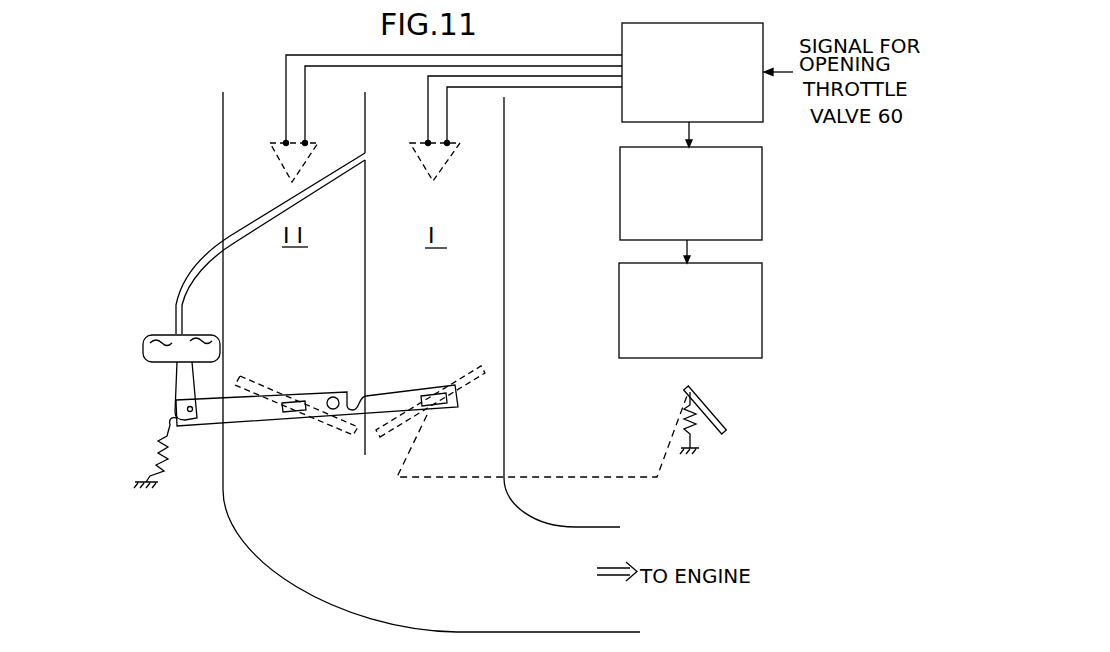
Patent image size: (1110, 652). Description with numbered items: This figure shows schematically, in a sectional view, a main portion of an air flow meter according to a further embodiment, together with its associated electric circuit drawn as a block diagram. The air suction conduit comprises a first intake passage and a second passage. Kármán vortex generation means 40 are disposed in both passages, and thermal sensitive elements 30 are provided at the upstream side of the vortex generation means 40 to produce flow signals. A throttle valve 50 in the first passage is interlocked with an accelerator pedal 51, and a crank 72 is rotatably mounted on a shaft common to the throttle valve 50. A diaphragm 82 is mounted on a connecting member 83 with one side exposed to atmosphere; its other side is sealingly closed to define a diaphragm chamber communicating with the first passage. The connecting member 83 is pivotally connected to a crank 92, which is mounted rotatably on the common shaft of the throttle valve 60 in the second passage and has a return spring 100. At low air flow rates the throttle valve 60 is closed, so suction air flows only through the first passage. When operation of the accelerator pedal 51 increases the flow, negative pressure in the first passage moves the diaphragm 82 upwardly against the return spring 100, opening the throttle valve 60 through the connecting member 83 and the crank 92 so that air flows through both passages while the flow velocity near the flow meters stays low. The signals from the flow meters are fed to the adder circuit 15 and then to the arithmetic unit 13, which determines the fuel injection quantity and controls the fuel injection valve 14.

The arithmetic unit 13 is at (762, 208).
The fuel injection valve 14 is at (762, 326).
The adder circuit 15 is at (763, 93).
The thermal sensitive elements 30 is at (285, 141).
The vortex generation means 40 is at (298, 156).
The throttle valve 50 is at (486, 370).
The accelerator pedal 51 is at (706, 403).
The throttle valve 60 is at (253, 386).
The crank 72 is at (460, 398).
The diaphragm 82 is at (176, 333).
The connecting member 83 is at (178, 385).
The crank 92 is at (208, 420).
The return spring 100 is at (146, 450).